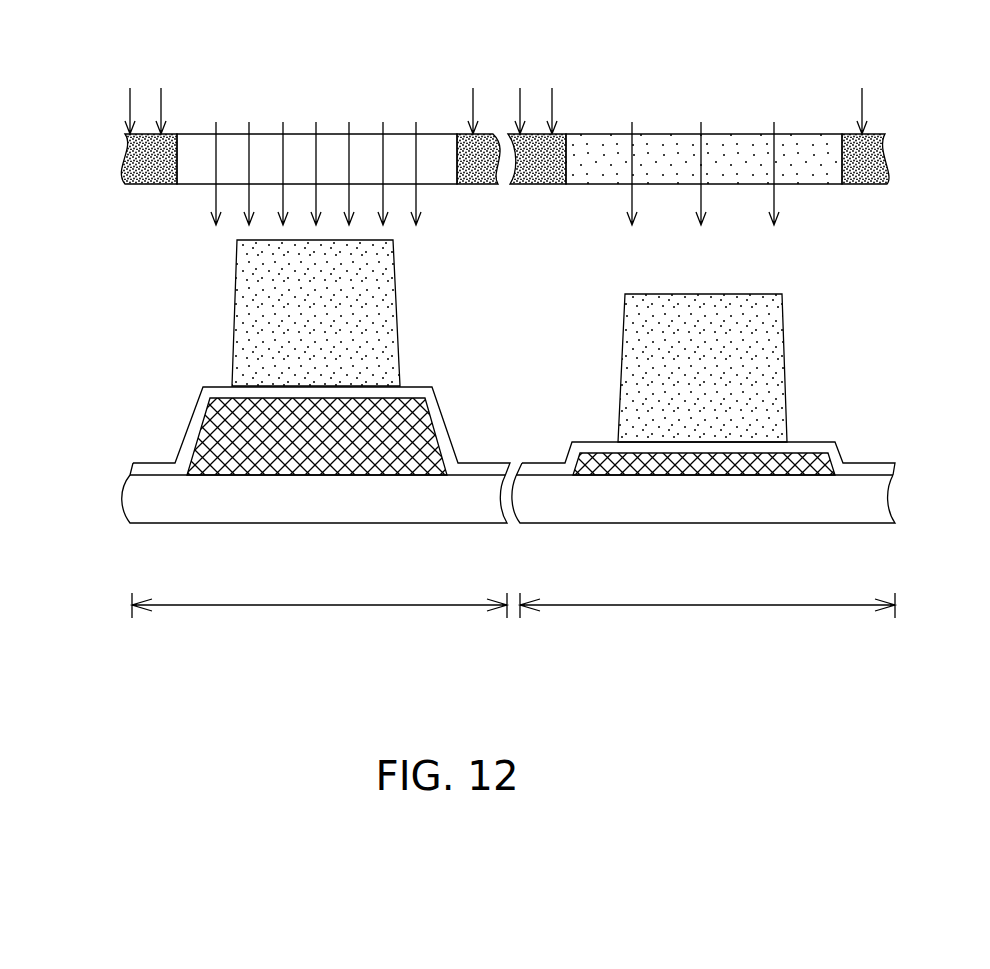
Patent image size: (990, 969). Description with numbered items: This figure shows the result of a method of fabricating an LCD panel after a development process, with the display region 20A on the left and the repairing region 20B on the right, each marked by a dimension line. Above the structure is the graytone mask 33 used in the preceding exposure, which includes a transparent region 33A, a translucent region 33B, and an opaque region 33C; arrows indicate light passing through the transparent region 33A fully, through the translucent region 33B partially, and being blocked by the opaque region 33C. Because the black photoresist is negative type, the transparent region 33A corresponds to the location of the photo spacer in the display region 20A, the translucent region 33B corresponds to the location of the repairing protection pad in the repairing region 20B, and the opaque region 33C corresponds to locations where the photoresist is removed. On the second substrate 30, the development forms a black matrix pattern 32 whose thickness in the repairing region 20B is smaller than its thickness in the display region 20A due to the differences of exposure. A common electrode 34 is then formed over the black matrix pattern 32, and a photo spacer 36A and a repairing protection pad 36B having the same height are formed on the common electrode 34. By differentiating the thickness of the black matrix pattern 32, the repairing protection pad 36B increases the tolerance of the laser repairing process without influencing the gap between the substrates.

The display region 20A is at (319, 597).
The repairing region 20B is at (707, 597).
The second substrate 30 is at (303, 512).
The black matrix pattern 32 is at (210, 436).
The graytone mask 33 is at (544, 160).
The transparent region 33A is at (297, 147).
The translucent region 33B is at (653, 145).
The opaque region 33C is at (155, 177).
The common electrode 34 is at (147, 470).
The photo spacer 36A is at (296, 334).
The repairing protection pad 36B is at (682, 390).